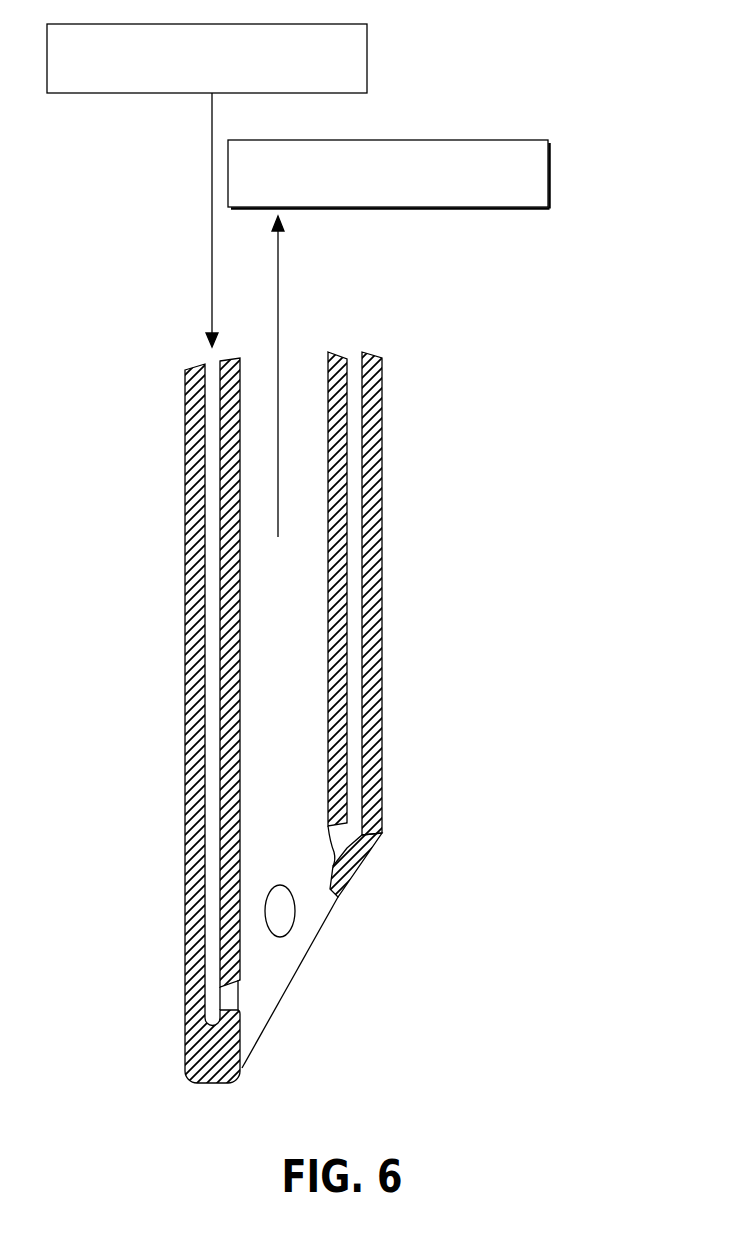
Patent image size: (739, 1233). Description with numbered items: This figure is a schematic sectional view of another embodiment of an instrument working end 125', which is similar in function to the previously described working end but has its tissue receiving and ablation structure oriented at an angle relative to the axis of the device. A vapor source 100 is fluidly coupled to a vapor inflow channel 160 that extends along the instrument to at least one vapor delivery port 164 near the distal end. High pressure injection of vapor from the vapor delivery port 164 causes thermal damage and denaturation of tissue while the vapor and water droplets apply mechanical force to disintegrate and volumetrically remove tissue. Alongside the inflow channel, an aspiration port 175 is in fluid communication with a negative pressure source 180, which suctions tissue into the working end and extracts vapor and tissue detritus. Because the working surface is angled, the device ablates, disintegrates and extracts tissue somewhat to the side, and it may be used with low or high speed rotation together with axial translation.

The vapor source 100 is at (183, 83).
The negative pressure source 180 is at (372, 197).
The working end 125' is at (365, 652).
The vapor inflow channel 160 is at (212, 558).
The aspiration port 175 is at (280, 685).
The vapor delivery port 164 is at (222, 1003).